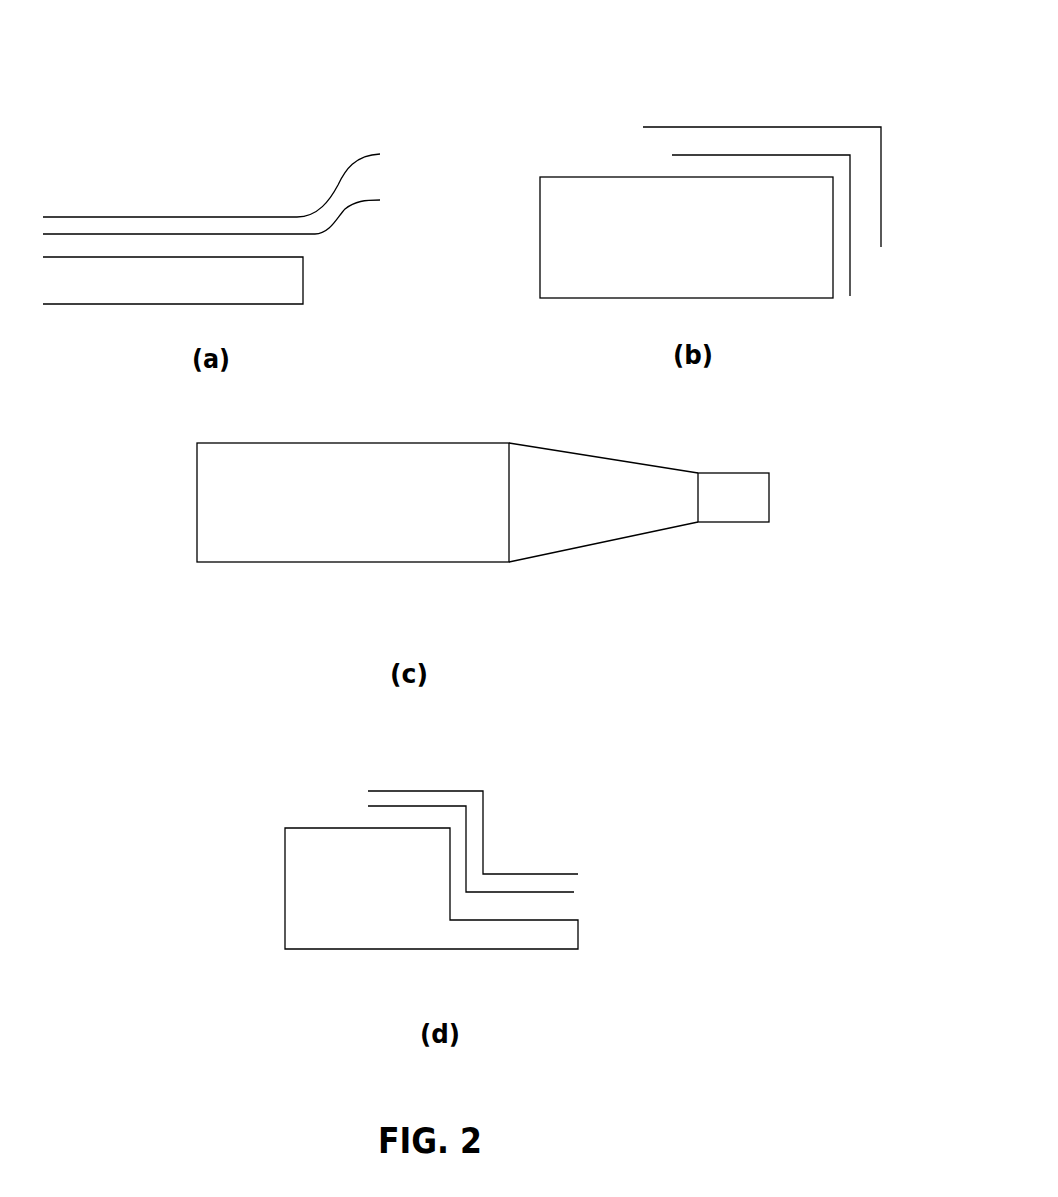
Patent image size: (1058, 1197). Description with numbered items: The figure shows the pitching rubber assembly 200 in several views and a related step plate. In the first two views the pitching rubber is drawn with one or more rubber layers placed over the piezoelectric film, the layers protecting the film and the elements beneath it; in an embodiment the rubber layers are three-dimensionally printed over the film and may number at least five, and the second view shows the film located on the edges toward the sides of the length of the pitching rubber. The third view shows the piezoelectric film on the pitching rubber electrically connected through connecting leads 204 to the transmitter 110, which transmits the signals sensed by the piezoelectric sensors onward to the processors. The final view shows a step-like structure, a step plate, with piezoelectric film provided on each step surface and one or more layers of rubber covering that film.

The optical fiber arrangement 200 is at (197, 98).
The transmitter 110 is at (733, 498).
The connecting leads 204 is at (578, 452).